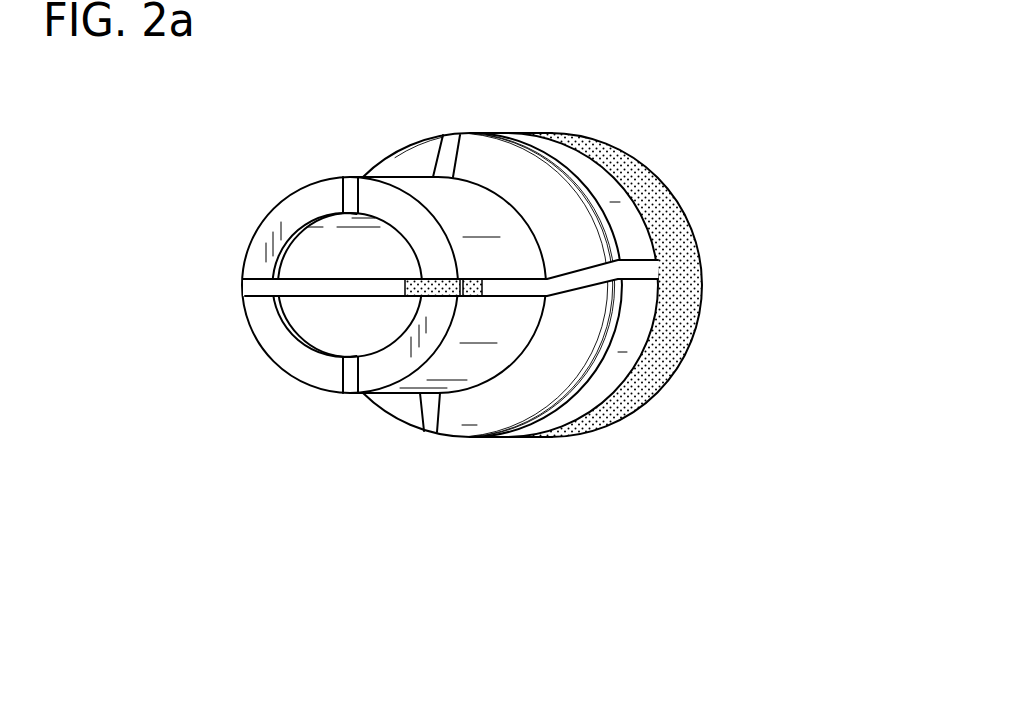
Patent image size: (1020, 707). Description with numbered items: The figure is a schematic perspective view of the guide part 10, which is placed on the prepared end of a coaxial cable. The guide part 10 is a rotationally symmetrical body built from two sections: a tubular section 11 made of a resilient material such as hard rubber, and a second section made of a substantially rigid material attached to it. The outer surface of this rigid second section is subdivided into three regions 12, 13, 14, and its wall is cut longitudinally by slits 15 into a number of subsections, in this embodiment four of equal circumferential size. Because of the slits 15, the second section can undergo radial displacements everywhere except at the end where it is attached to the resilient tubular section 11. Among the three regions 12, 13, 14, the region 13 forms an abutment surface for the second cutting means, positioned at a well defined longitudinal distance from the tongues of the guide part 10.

The guide part 10 is at (766, 328).
The tubular section 11 is at (622, 163).
The outer surface region of the second section 12 is at (420, 187).
The abutment surface 13 is at (427, 150).
The outer surface region of the second section 14 is at (558, 156).
The slits 15 is at (248, 286).